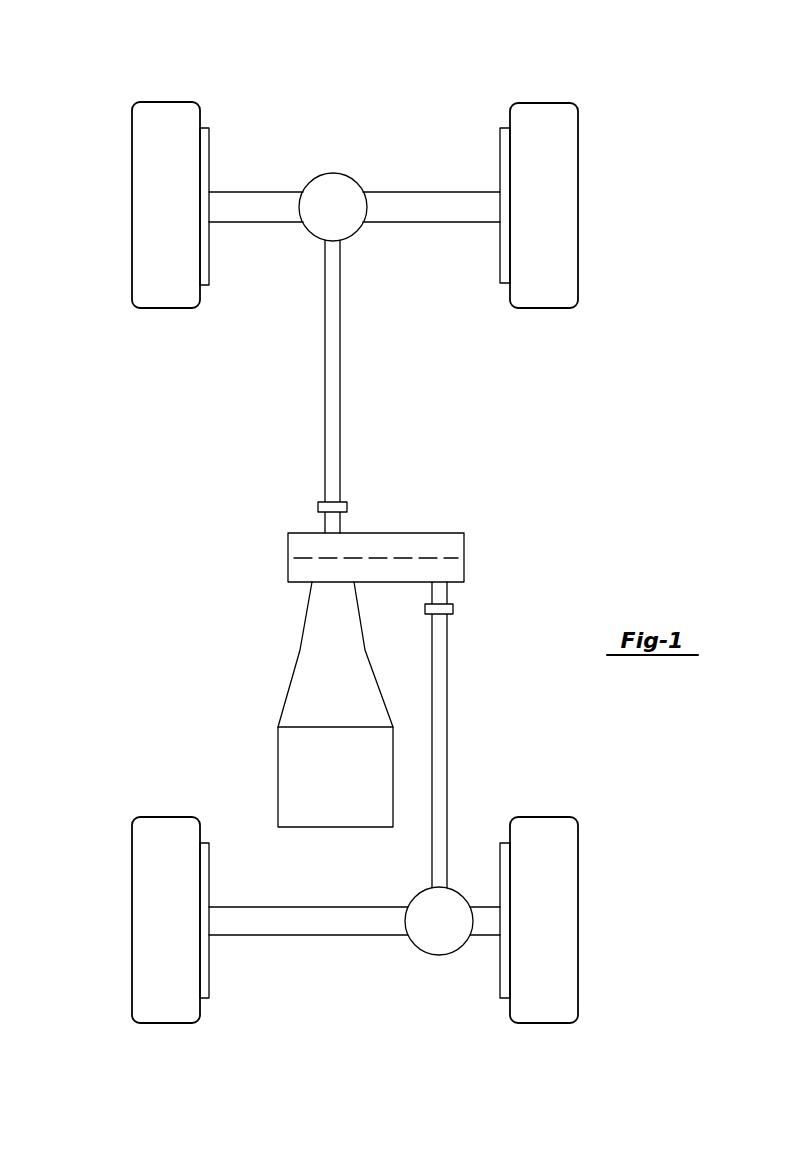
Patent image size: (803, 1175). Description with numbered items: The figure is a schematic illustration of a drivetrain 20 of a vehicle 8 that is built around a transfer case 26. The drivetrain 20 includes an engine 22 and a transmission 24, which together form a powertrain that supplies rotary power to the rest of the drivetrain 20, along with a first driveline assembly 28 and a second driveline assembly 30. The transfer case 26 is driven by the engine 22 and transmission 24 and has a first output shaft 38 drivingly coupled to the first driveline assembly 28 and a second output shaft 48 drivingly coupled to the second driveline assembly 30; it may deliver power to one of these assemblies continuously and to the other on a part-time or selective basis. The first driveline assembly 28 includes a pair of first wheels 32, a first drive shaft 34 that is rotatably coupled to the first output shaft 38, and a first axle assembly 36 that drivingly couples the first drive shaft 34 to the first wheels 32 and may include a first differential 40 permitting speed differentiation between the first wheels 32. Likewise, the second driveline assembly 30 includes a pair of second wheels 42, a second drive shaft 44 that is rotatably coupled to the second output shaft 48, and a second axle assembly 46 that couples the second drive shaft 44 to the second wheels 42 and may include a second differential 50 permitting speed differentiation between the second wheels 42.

The vehicle 8 is at (94, 120).
The drivetrain 20 is at (631, 345).
The engine 22 is at (290, 782).
The transmission 24 is at (307, 657).
The transfer case 26 is at (427, 533).
The first driveline assembly 28 is at (360, 121).
The second driveline assembly 30 is at (364, 957).
The first wheels 32 is at (165, 102).
The first drive shaft 34 is at (330, 365).
The first axle assembly 36 is at (245, 192).
The first output shaft 38 is at (327, 523).
The first differential 40 is at (333, 172).
The second wheels 42 is at (165, 817).
The second drive shaft 44 is at (448, 677).
The second axle assembly 46 is at (242, 935).
The second output shaft 48 is at (442, 598).
The second differential 50 is at (436, 940).